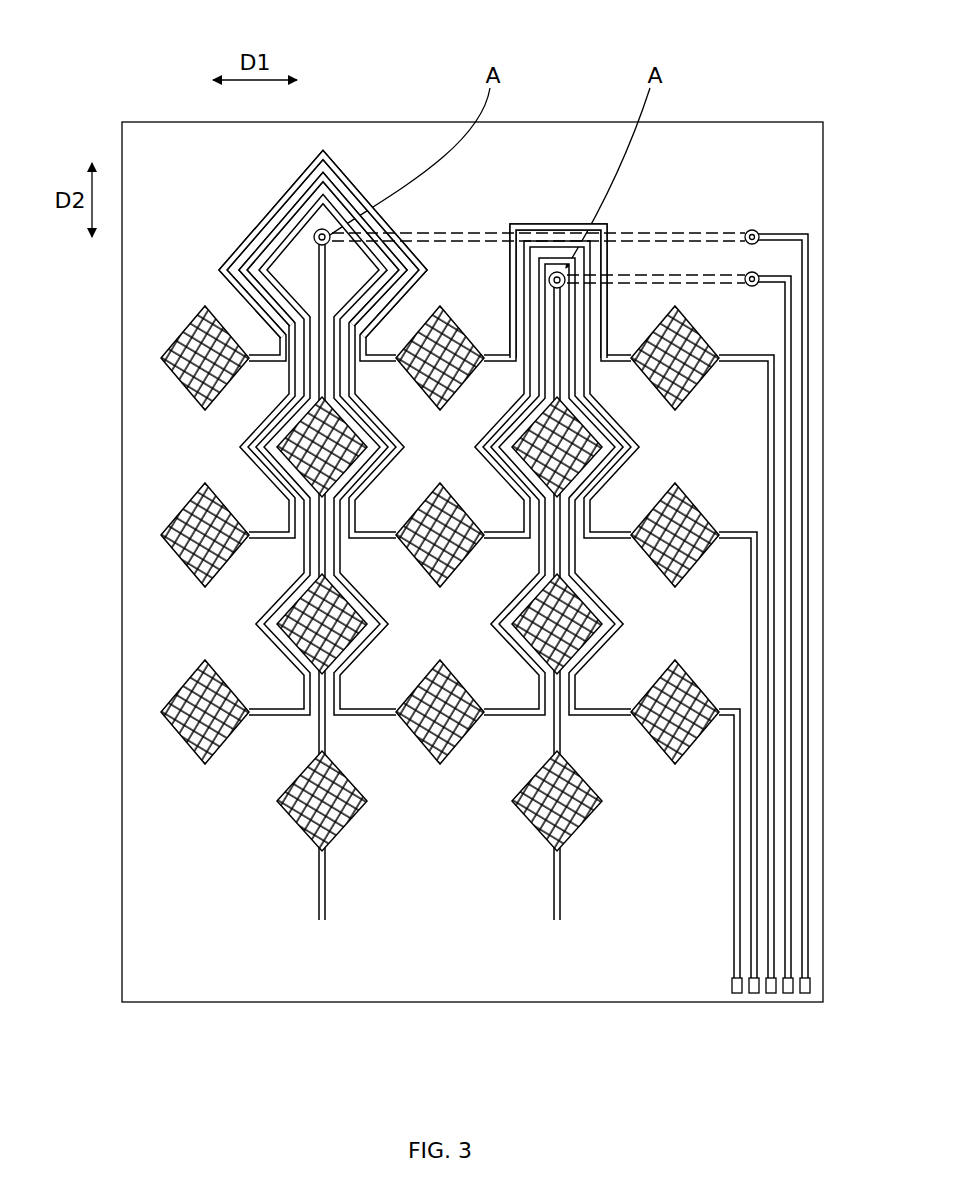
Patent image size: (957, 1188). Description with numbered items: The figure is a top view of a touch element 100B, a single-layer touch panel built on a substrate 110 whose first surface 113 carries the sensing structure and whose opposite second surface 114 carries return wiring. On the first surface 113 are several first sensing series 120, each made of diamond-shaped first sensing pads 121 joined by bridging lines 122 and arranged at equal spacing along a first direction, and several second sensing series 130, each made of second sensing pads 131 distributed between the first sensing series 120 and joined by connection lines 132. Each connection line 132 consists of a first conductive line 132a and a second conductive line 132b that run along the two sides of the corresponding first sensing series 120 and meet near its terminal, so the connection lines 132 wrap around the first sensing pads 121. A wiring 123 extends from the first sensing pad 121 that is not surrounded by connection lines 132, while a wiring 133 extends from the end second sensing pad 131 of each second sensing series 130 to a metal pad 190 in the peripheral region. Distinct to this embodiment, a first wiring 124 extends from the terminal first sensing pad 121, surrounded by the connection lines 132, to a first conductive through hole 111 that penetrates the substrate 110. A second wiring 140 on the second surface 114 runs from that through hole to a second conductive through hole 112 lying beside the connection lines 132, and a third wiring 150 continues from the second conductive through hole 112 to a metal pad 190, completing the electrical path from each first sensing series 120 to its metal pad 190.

The touch element 100B is at (800, 1083).
The substrate 110 is at (160, 148).
The first conductive through hole 111 is at (316, 232).
The second conductive through hole 112 is at (745, 236).
The first surface 113 is at (178, 893).
The second surface 114 is at (178, 938).
The first sensing series 120 is at (293, 845).
The first sensing pad 121 is at (293, 455).
The bridging line 122 is at (318, 728).
The wiring 123 is at (325, 880).
The first wiring 124 is at (322, 280).
The second sensing series 130 is at (170, 330).
The second sensing pad 131 is at (190, 377).
The connection line 132 is at (457, 60).
The first conductive line 132a is at (375, 217).
The second conductive line 132b is at (282, 198).
The wiring 133 is at (772, 835).
The second wiring 140 is at (678, 275).
The third wiring 150 is at (783, 277).
The metal pad 190 is at (753, 993).